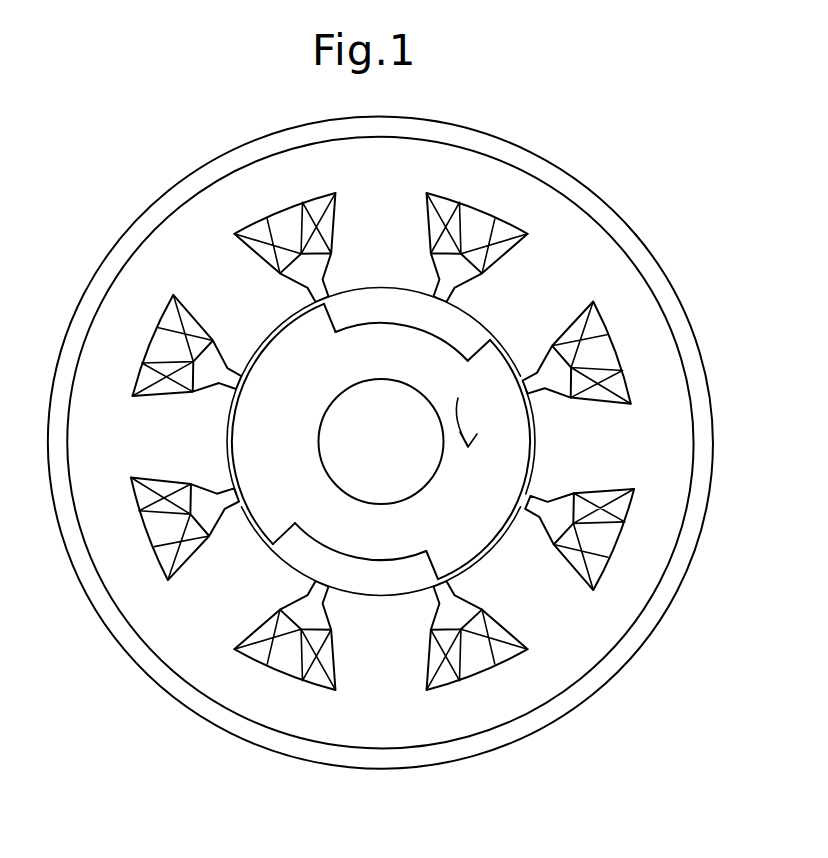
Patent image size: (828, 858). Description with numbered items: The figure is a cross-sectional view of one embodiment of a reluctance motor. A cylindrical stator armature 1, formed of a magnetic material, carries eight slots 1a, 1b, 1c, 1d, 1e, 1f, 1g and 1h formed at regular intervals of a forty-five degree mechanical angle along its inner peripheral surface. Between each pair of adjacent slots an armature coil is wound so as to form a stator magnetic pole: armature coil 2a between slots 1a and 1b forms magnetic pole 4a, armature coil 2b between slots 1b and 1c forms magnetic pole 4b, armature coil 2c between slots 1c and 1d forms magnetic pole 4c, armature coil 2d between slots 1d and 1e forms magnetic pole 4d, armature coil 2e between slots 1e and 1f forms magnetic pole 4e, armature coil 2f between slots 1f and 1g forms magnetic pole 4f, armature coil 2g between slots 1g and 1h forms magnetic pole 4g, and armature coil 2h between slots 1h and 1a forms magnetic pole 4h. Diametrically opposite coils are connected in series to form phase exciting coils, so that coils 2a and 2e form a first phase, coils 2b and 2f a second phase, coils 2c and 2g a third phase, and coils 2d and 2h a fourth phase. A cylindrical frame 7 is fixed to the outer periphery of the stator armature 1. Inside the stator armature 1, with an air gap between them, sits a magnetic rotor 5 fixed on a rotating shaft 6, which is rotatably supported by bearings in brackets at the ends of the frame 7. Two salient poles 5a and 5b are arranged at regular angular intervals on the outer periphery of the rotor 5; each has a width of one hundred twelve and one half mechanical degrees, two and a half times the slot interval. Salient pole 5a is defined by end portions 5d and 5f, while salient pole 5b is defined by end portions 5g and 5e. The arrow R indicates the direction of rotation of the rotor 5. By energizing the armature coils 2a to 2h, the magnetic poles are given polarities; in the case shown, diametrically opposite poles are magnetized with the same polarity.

The stator armature 1 is at (637, 287).
The cylindrical frame 7 is at (693, 325).
The first slot 1a is at (288, 218).
The second slot 1b is at (486, 216).
The third slot 1c is at (607, 348).
The fourth slot 1d is at (618, 540).
The fifth slot 1e is at (484, 672).
The sixth slot 1f is at (292, 680).
The seventh slot 1g is at (160, 544).
The eighth slot 1h is at (158, 347).
The armature coil 2a is at (322, 207).
The armature coil 2b is at (512, 242).
The armature coil 2c is at (620, 380).
The armature coil 2d is at (594, 576).
The armature coil 2e is at (455, 688).
The armature coil 2f is at (258, 660).
The armature coil 2g is at (142, 500).
The armature coil 2h is at (163, 311).
The magnetic pole 4a is at (358, 272).
The magnetic pole 4b is at (510, 312).
The magnetic pole 4c is at (585, 434).
The magnetic pole 4d is at (510, 576).
The magnetic pole 4e is at (396, 622).
The magnetic pole 4f is at (264, 576).
The magnetic pole 4g is at (210, 460).
The magnetic pole 4h is at (243, 340).
The magnetic rotor 5 is at (392, 344).
The salient pole 5a is at (255, 402).
The salient pole 5b is at (518, 479).
The end portion 5d is at (322, 318).
The end portion 5e is at (430, 564).
The end portion 5f is at (293, 530).
The end portion 5g is at (487, 356).
The rotating shaft 6 is at (334, 449).
The rotation direction R is at (472, 415).